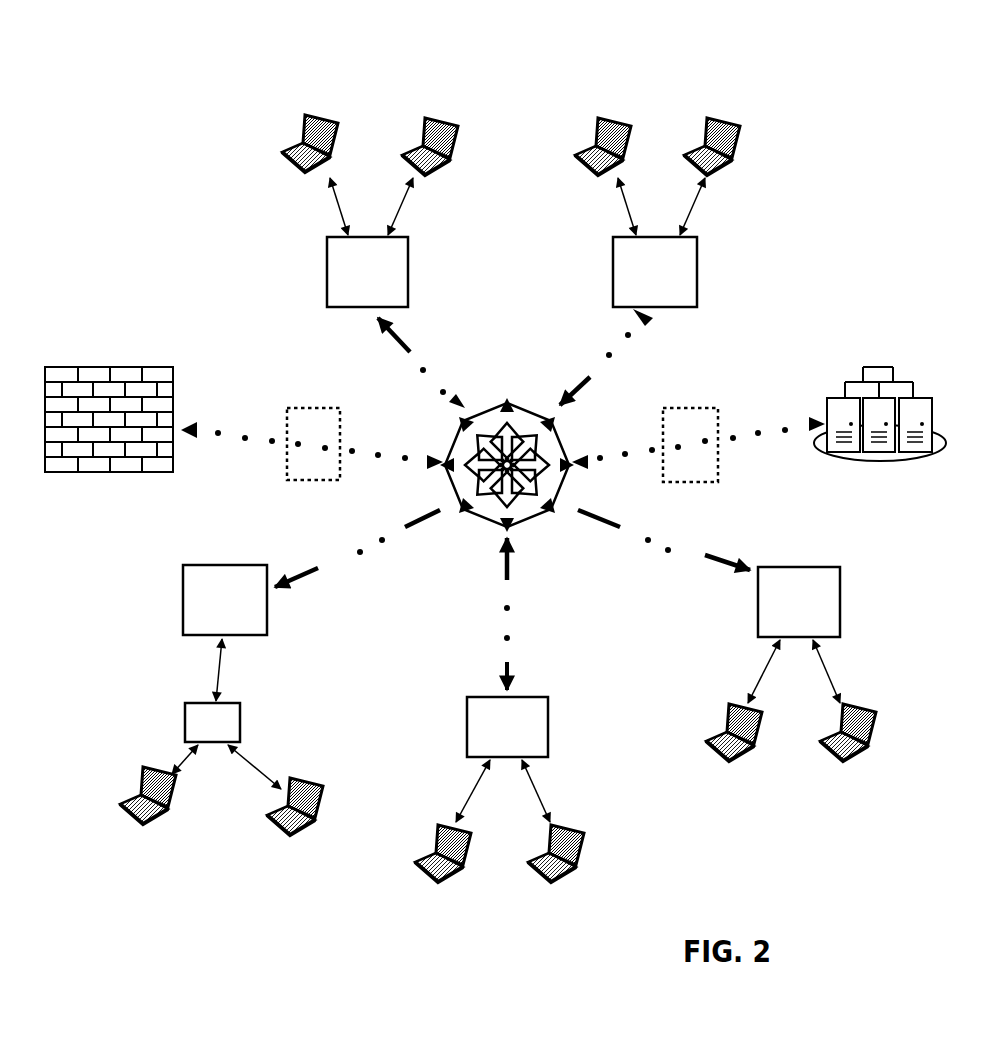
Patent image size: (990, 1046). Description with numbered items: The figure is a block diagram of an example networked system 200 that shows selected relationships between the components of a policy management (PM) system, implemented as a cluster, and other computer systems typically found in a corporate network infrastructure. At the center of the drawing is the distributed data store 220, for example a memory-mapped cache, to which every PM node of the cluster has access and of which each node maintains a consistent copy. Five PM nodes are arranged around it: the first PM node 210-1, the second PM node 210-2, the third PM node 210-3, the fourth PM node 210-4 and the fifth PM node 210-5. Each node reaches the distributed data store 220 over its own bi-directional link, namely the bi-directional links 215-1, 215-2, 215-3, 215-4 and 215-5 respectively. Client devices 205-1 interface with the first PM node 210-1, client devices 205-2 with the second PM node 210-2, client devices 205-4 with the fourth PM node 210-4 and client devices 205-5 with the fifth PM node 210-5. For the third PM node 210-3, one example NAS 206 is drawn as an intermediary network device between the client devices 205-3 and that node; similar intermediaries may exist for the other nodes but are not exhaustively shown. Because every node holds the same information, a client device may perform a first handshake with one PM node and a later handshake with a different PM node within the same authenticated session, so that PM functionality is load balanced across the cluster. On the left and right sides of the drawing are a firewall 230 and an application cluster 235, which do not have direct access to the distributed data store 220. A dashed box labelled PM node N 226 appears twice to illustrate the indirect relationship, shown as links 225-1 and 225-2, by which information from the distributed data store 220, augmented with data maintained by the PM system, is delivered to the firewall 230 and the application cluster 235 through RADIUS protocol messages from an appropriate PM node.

The networked system 200 is at (935, 107).
The client devices 205-1 is at (362, 89).
The client devices 205-2 is at (673, 90).
The client devices 205-3 is at (192, 843).
The client devices 205-4 is at (462, 898).
The client devices 205-5 is at (785, 800).
The NAS 206 is at (185, 705).
The PM node 1 210-1 is at (327, 242).
The PM node 2 210-2 is at (697, 240).
The PM node 3 210-3 is at (183, 598).
The PM node 4 210-4 is at (550, 758).
The PM node 5 210-5 is at (840, 600).
The bi-directional link 215-1 is at (410, 352).
The bi-directional link 215-2 is at (609, 355).
The bi-directional link 215-3 is at (405, 512).
The bi-directional link 215-4 is at (512, 578).
The bi-directional link 215-5 is at (638, 507).
The distributed data store 220 is at (508, 403).
The link 225-1 is at (245, 440).
The link 225-2 is at (758, 435).
The PM node N 226 is at (340, 423).
The firewall 230 is at (115, 365).
The application cluster 235 is at (878, 366).